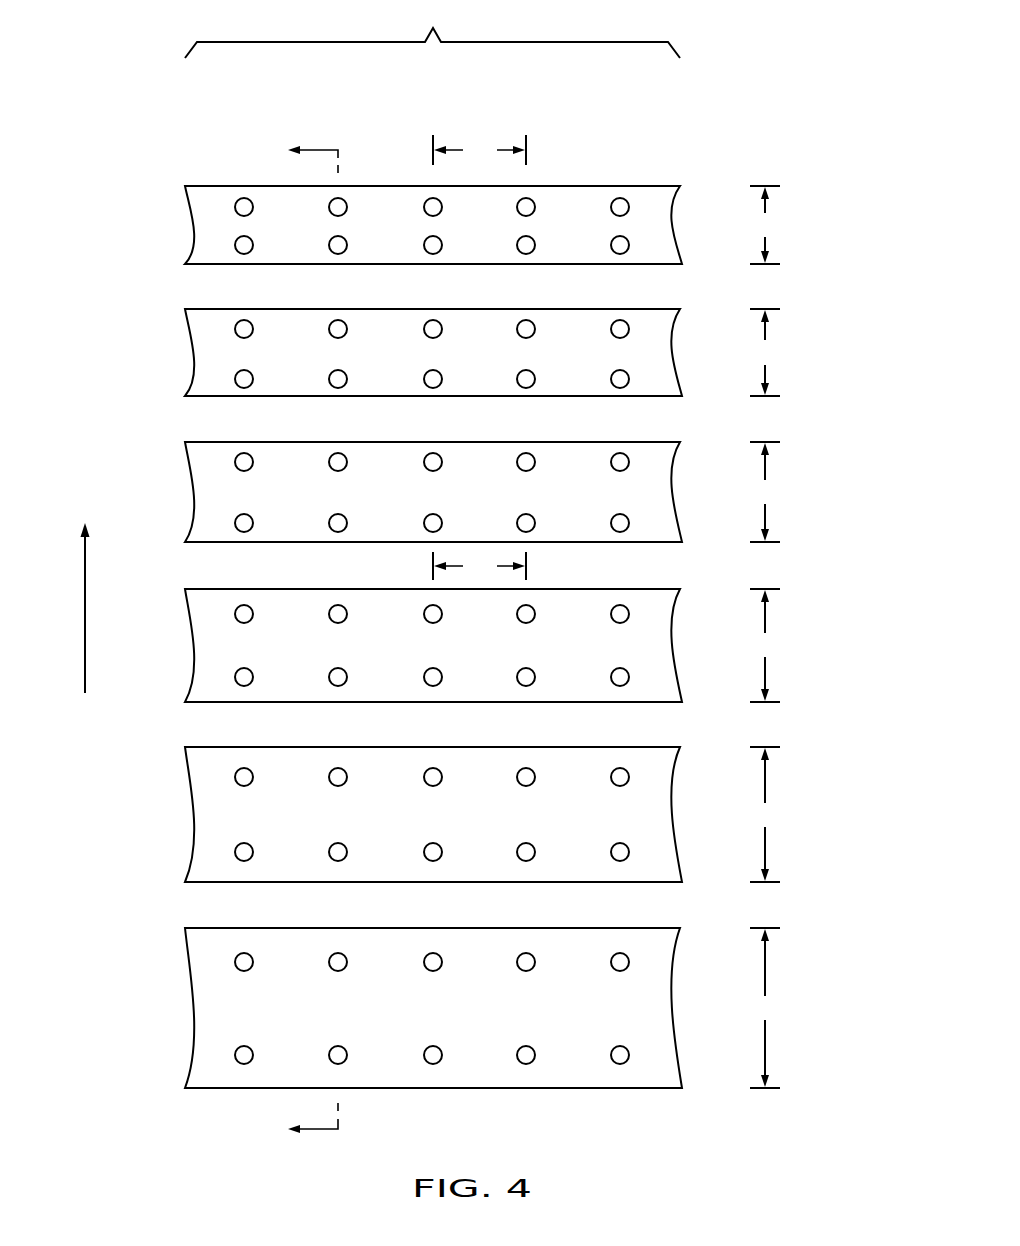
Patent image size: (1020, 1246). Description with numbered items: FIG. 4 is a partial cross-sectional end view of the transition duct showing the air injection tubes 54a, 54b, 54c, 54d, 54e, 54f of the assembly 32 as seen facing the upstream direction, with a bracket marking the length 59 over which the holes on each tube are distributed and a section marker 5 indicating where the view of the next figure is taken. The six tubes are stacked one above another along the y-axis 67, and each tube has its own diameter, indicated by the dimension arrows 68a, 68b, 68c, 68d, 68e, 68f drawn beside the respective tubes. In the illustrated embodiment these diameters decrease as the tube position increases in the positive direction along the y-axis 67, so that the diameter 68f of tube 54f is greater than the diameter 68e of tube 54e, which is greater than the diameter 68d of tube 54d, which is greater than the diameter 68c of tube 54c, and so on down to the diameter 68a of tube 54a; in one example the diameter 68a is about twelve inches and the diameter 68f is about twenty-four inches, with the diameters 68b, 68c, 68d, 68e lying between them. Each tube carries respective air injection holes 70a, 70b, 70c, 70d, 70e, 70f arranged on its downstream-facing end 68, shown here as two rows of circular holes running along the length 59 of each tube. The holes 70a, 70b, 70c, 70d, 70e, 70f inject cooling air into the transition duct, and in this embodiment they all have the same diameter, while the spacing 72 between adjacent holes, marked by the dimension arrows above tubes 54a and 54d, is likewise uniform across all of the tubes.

The sheet assembly 32 is at (646, 110).
The length 59 is at (432, 29).
The section line of FIG. 5 is at (313, 642).
The y-axis 67 is at (85, 612).
The downstream-facing end 68 is at (222, 813).
The spacing 72 is at (479, 358).
The air injection tube 54a is at (207, 186).
The air injection tube 54b is at (207, 309).
The air injection tube 54c is at (207, 442).
The air injection tube 54d is at (207, 589).
The air injection tube 54e is at (207, 747).
The air injection tube 54f is at (207, 928).
The air injection holes 70a is at (615, 203).
The air injection holes 70b is at (518, 334).
The air injection holes 70c is at (518, 467).
The air injection holes 70d is at (615, 619).
The air injection holes 70e is at (518, 782).
The air injection holes 70f is at (518, 967).
The diameter 68a is at (765, 225).
The diameter 68b is at (765, 352).
The diameter 68c is at (765, 492).
The diameter 68d is at (765, 645).
The diameter 68e is at (765, 814).
The diameter 68f is at (765, 1008).